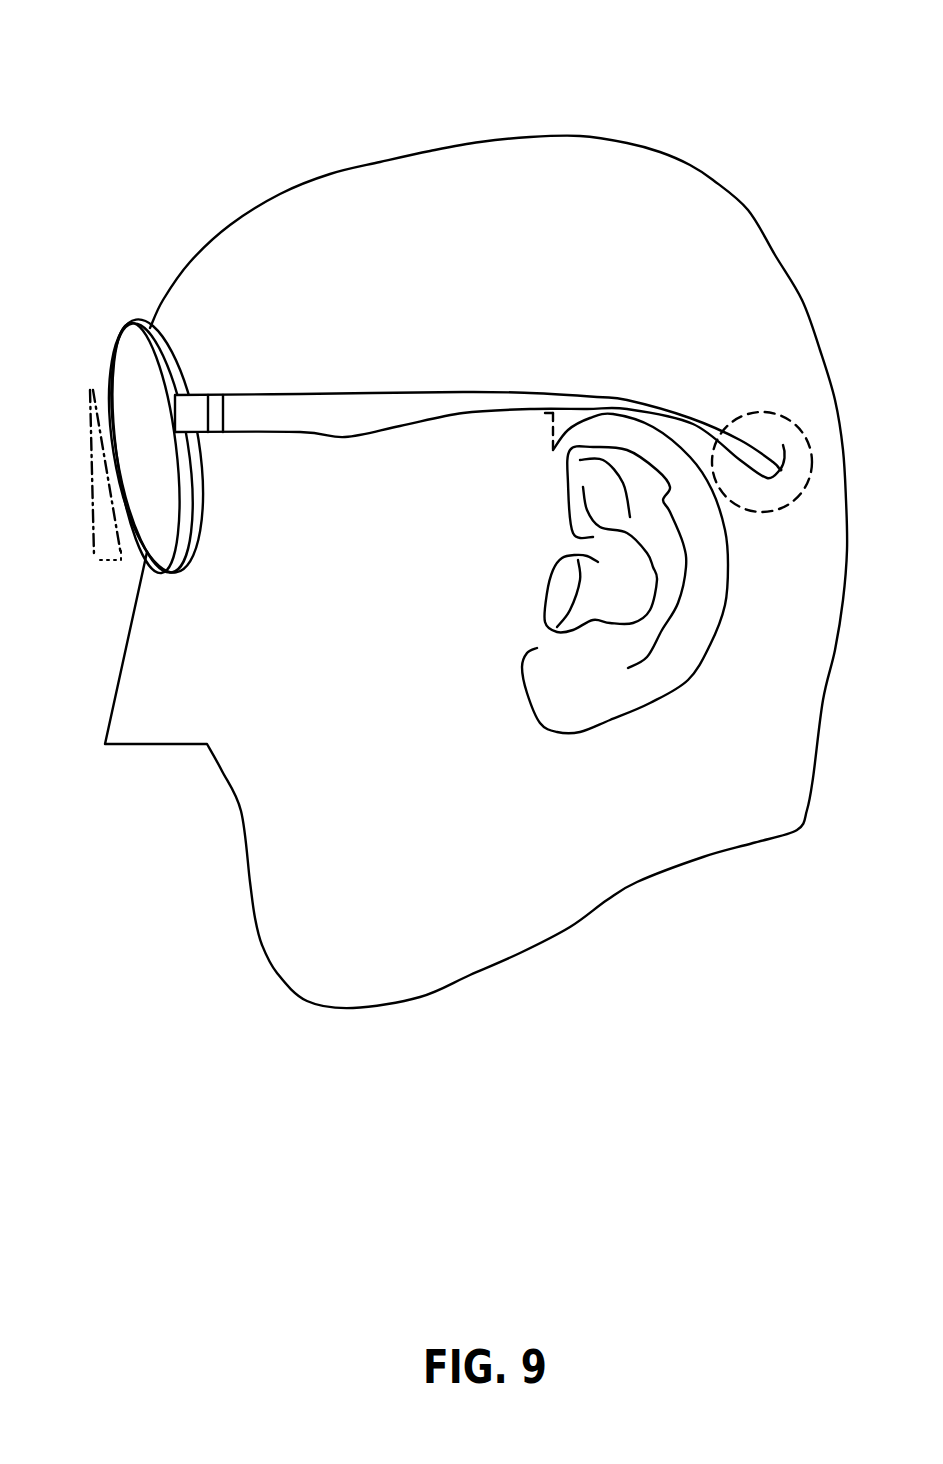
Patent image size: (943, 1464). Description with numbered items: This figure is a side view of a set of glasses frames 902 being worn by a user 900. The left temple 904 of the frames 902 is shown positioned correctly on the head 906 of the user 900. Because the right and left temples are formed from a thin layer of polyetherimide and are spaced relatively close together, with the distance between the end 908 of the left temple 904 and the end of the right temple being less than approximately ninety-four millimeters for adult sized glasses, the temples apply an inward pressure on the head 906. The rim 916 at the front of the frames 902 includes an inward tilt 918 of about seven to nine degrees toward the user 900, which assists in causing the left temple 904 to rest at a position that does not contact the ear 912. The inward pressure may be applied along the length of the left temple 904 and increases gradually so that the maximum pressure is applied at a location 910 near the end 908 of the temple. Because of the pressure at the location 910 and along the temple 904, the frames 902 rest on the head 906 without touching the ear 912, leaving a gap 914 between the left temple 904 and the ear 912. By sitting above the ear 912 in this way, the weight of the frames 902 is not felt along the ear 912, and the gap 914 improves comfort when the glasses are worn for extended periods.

The user 900 is at (440, 297).
The glasses frames 902 is at (446, 426).
The left temple 904 is at (372, 394).
The head 906 is at (392, 158).
The end of the left temple 908 is at (779, 490).
The location 910 is at (777, 415).
The ear 912 is at (520, 684).
The gap 914 is at (552, 420).
The rim 916 is at (142, 322).
The inward tilt 918 is at (94, 558).